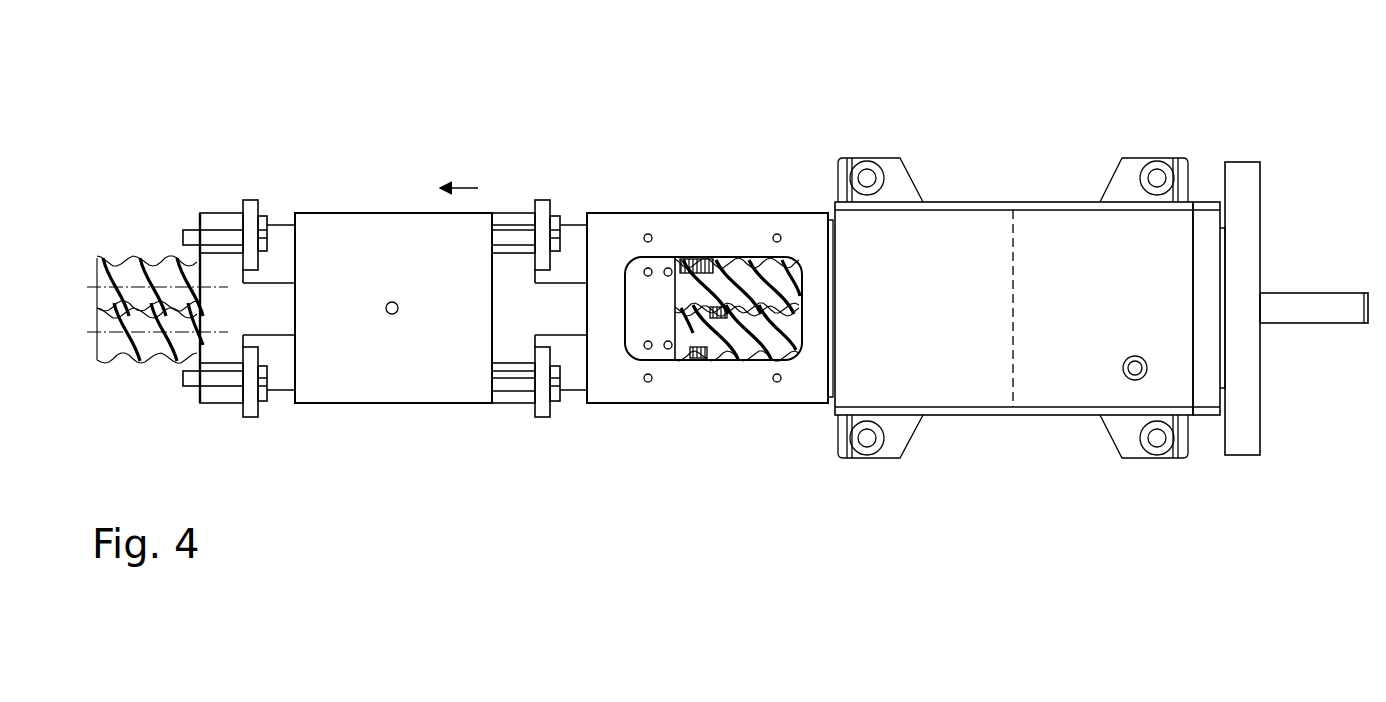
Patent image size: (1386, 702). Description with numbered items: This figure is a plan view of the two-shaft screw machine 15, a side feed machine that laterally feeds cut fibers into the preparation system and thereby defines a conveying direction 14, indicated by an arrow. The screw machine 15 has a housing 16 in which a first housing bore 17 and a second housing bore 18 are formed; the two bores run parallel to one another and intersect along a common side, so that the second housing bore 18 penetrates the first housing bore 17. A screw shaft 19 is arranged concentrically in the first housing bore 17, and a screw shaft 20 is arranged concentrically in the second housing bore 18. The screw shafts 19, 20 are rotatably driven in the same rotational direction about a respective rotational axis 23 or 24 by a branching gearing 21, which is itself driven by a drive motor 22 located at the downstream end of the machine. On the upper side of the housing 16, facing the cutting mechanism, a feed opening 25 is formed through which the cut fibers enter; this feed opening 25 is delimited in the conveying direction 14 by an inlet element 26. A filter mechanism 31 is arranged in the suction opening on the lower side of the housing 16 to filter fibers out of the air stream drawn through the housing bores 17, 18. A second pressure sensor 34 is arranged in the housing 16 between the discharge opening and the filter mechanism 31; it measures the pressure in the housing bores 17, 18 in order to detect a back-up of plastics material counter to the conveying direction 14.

The conveying direction 14 is at (460, 188).
The two-shaft screw machine 15 is at (620, 208).
The housing 16 is at (352, 220).
The first housing bore 17 is at (750, 260).
The second housing bore 18 is at (735, 357).
The screw shaft 19 is at (772, 268).
The screw shaft 20 is at (785, 345).
The branching gearing 21 is at (948, 220).
The drive motor 22 is at (1047, 218).
The rotational axis 23 is at (122, 292).
The rotational axis 24 is at (123, 305).
The feed opening 25 is at (692, 252).
The inlet element 26 is at (668, 255).
The filter mechanism 31 is at (704, 365).
The second pressure sensor 34 is at (393, 302).